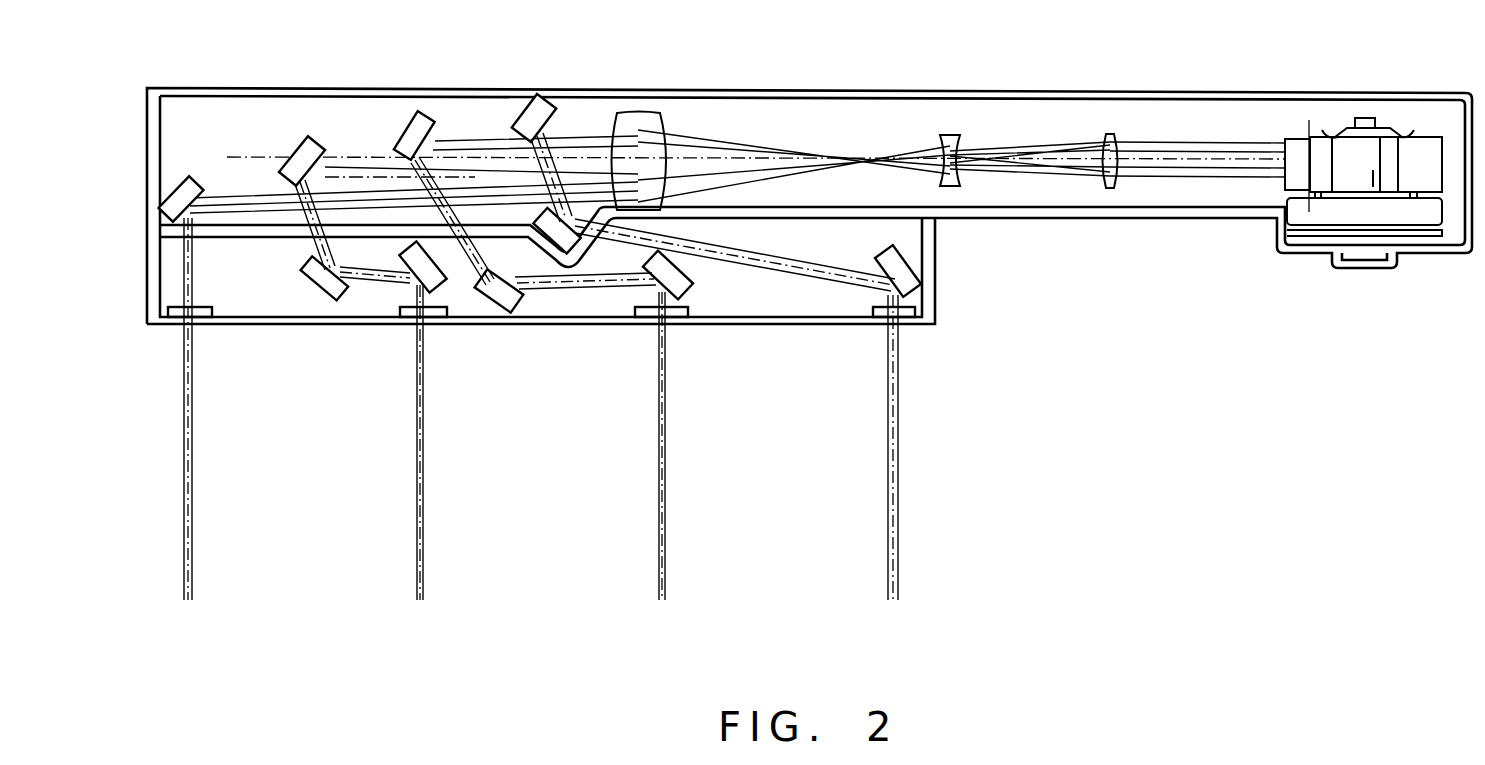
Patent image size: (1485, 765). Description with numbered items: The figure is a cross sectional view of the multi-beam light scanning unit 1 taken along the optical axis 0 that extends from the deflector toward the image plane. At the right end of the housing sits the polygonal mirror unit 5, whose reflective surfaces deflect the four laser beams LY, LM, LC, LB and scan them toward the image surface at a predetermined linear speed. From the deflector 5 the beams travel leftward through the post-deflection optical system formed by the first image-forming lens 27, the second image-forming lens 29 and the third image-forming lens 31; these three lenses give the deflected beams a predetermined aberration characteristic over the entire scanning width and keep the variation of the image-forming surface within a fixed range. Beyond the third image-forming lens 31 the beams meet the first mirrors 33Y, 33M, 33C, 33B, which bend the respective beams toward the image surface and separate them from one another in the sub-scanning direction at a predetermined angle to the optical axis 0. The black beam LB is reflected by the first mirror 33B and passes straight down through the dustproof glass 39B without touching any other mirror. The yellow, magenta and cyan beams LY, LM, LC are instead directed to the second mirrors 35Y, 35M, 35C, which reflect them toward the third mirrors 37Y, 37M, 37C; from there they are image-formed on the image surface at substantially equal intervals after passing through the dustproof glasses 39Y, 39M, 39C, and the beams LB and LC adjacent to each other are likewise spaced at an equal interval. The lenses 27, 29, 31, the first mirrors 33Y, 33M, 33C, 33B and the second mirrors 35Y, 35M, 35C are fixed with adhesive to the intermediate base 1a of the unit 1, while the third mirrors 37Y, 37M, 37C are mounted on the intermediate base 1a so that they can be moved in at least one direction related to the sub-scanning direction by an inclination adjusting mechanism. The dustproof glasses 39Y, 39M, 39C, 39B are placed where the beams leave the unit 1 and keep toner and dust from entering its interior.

The multi-beam light scanning unit 1 is at (1438, 92).
The intermediate base 1a is at (1166, 213).
The optical axis 0 is at (1211, 165).
The polygonal mirror unit 5 is at (1345, 153).
The first image-forming lens 27 is at (1108, 134).
The second image-forming lens 29 is at (952, 135).
The third image-forming lens 31 is at (637, 123).
The first mirror 33B is at (185, 177).
The first mirror 33C is at (305, 137).
The first mirror 33M is at (422, 118).
The first mirror 33Y is at (543, 103).
The second mirror 35C is at (333, 302).
The second mirror 35M is at (508, 314).
The second mirror 35Y is at (568, 255).
The third mirror 37C is at (434, 294).
The third mirror 37M is at (686, 292).
The third mirror 37Y is at (921, 264).
The dustproof glass 39B is at (206, 320).
The dustproof glass 39C is at (410, 322).
The dustproof glass 39M is at (645, 322).
The dustproof glass 39Y is at (878, 322).
The laser beam LB is at (195, 426).
The laser beam LC is at (425, 459).
The laser beam LM is at (665, 463).
The laser beam LY is at (897, 464).